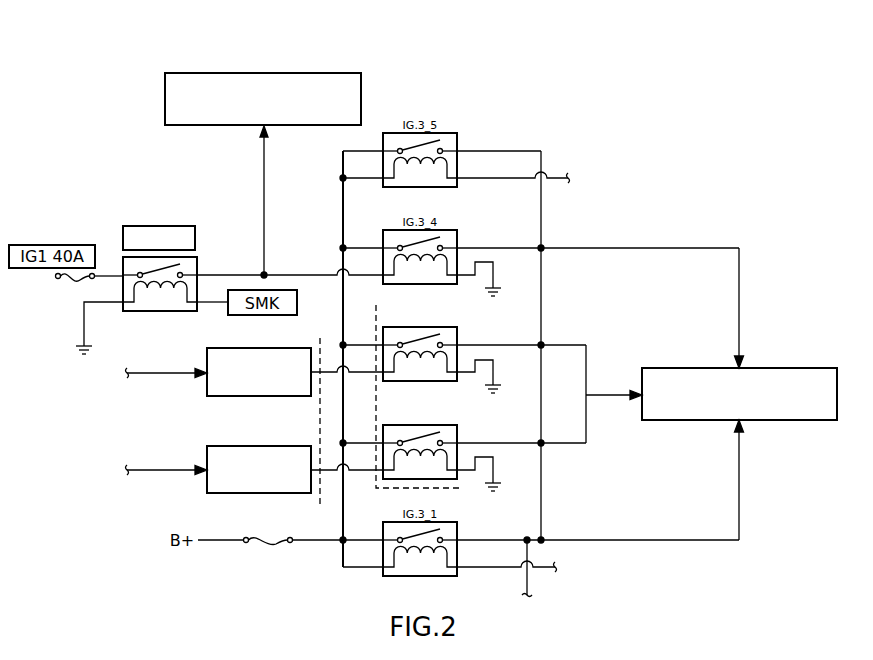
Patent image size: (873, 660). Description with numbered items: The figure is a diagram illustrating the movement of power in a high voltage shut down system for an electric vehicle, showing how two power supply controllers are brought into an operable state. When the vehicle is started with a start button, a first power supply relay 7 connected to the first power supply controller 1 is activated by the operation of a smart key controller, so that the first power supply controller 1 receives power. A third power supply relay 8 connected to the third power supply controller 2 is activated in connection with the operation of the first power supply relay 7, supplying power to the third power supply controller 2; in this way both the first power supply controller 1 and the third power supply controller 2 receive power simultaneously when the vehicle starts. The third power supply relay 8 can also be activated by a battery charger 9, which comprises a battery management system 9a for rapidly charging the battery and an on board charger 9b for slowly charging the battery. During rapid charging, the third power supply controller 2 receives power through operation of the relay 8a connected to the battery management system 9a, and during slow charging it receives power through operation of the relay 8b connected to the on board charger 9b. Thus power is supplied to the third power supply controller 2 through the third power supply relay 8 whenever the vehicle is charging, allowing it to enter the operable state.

The first power supply controller 1 is at (275, 72).
The third power supply controller 2 is at (780, 368).
The first power supply relay 7 is at (197, 258).
The third power supply relay 8 is at (463, 412).
The relay 8a is at (457, 331).
The relay 8b is at (447, 479).
The battery charger 9 is at (183, 400).
The battery management system (BMS) 9a is at (207, 350).
The on board charger (OBC) 9b is at (207, 448).